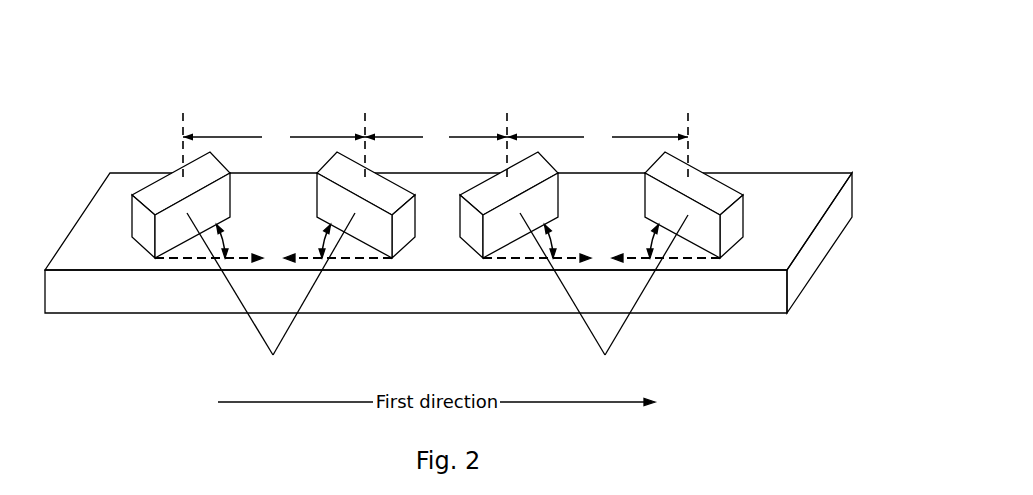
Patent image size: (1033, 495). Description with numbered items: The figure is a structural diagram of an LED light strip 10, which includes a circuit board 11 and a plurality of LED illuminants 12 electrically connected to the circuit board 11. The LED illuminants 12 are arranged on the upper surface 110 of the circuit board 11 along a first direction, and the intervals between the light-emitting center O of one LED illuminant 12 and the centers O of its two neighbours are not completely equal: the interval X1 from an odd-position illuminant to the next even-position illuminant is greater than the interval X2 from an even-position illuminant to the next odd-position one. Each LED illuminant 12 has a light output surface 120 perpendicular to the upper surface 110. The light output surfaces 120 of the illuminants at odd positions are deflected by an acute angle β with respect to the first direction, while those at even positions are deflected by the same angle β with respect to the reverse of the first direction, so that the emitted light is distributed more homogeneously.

The LED light strip 10 is at (450, 27).
The circuit board 11 is at (417, 297).
The upper surface 110 is at (810, 207).
The LED illuminant 12 is at (196, 108).
The light output surface 120 is at (187, 213).